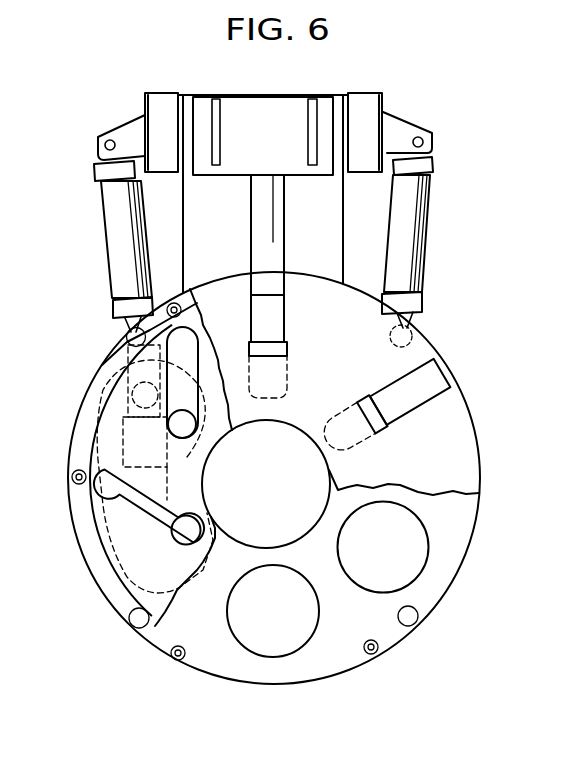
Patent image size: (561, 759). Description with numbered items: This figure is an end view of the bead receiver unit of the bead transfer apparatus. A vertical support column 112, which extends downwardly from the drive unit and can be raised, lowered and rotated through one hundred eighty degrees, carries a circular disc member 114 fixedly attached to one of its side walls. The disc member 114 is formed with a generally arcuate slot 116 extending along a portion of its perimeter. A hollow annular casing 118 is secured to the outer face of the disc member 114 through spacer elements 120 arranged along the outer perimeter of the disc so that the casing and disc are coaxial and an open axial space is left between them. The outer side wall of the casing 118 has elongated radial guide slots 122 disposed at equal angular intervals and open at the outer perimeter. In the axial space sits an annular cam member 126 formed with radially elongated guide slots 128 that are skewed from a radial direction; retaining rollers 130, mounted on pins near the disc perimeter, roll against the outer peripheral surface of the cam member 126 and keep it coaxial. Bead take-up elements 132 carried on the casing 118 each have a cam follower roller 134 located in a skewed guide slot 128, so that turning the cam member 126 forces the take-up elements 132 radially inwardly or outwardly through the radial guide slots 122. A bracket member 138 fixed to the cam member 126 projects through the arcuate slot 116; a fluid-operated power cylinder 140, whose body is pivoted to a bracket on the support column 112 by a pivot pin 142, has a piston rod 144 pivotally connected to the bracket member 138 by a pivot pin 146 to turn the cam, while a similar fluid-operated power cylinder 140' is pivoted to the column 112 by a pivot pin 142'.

The vertical support column 112 is at (295, 200).
The circular disc member 114 is at (291, 686).
The arcuate slot 116 is at (95, 548).
The annular casing 118 is at (470, 471).
The spacer elements 120 is at (72, 477).
The radial guide slots 122 is at (283, 322).
The annular cam member 126 is at (123, 586).
The guide slots 128 is at (196, 352).
The retaining rollers 130 is at (126, 342).
The bead take-up elements 132 is at (350, 402).
The cam follower roller 134 is at (201, 429).
The bracket member 138 is at (123, 436).
The fluid-operated power cylinder 140 is at (113, 246).
The fluid-operated power cylinder 140' is at (434, 242).
The pivot pin 142 is at (118, 124).
The pivot pin 142' is at (420, 119).
The piston rod 144 is at (134, 373).
The pivot pin 146 is at (131, 396).